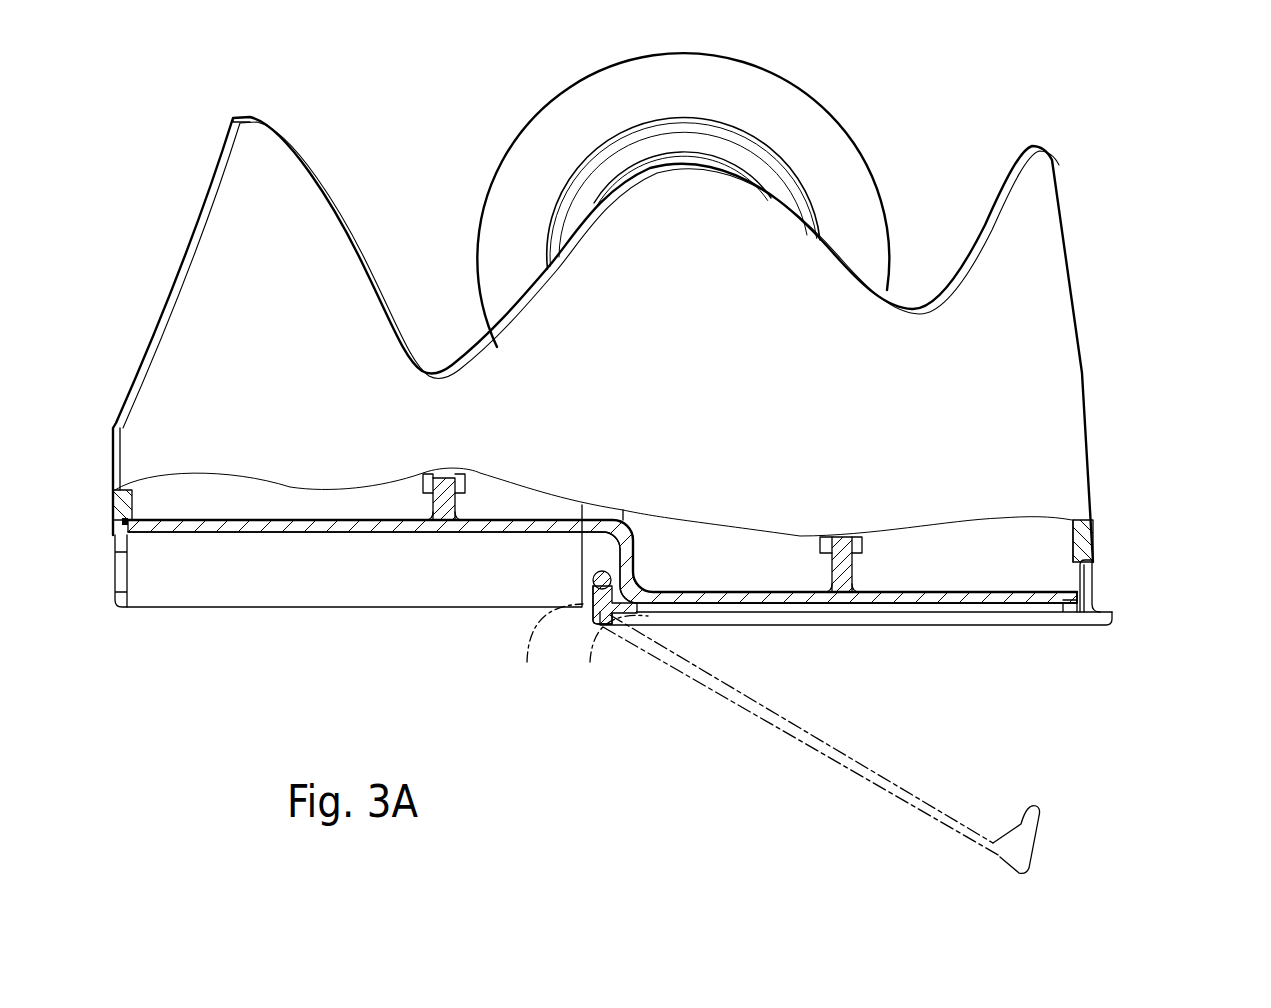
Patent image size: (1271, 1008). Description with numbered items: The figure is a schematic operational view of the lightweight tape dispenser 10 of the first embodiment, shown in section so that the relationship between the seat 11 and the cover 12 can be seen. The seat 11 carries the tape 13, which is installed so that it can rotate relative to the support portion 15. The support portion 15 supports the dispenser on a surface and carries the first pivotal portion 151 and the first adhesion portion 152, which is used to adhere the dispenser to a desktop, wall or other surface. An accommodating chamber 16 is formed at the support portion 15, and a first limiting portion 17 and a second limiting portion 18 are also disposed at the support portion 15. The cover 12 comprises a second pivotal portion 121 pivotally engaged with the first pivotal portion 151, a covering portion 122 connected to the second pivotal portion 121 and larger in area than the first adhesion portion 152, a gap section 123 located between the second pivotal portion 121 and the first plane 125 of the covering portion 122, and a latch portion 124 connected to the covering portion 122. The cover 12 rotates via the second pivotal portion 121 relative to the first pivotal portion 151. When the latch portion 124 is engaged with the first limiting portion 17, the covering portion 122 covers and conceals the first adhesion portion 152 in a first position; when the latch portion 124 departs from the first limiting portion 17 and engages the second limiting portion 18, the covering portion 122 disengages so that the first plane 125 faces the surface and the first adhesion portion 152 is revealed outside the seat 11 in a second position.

The lightweight tape dispenser 10 is at (1258, 116).
The seat 11 is at (1064, 178).
The cover 12 is at (825, 640).
The tape 13 is at (513, 198).
The support portion 15 is at (1072, 493).
The accommodating chamber 16 is at (240, 588).
The first limiting portion 17 is at (1093, 553).
The second limiting portion 18 is at (120, 563).
The second pivotal portion 121 is at (583, 612).
The first pivotal portion 151 is at (602, 605).
The covering portion 122 is at (950, 620).
The gap section 123 is at (603, 623).
The latch portion 124 is at (1087, 583).
The first plane 125 is at (643, 610).
The first adhesion portion 152 is at (1020, 605).